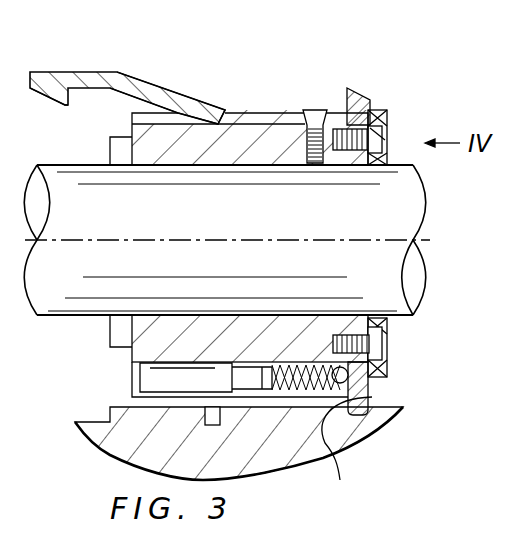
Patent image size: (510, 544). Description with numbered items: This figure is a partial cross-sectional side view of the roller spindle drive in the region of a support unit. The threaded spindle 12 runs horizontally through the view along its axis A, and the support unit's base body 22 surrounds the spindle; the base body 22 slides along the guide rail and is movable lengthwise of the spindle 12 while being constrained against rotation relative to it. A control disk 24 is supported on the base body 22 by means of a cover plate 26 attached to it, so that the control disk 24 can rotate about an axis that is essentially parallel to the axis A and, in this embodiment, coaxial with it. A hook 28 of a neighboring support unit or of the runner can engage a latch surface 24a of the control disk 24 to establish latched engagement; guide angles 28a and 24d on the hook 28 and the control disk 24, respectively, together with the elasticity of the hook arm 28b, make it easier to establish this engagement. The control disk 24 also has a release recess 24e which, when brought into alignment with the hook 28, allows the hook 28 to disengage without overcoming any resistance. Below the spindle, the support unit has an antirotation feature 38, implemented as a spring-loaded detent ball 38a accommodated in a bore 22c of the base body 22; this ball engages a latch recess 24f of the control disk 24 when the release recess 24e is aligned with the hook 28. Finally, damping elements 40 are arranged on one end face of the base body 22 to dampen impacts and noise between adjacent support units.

The threaded spindle 12 is at (43, 318).
The axis of the threaded spindle A is at (328, 240).
The base body 22 is at (258, 138).
The bore 22c is at (140, 380).
The control disk 24 is at (402, 411).
The latch surface 24a is at (347, 112).
The guide angle 24d is at (362, 98).
The release recess 24e is at (372, 102).
The latch recess 24f is at (368, 388).
The cover plate 26 is at (388, 113).
The hook 28 is at (53, 78).
The guide angle 28a is at (45, 98).
The hook arm 28b is at (182, 98).
The antirotation feature 38 is at (289, 429).
The spring-loaded detent ball 38a is at (347, 452).
The damping element 40 is at (117, 333).